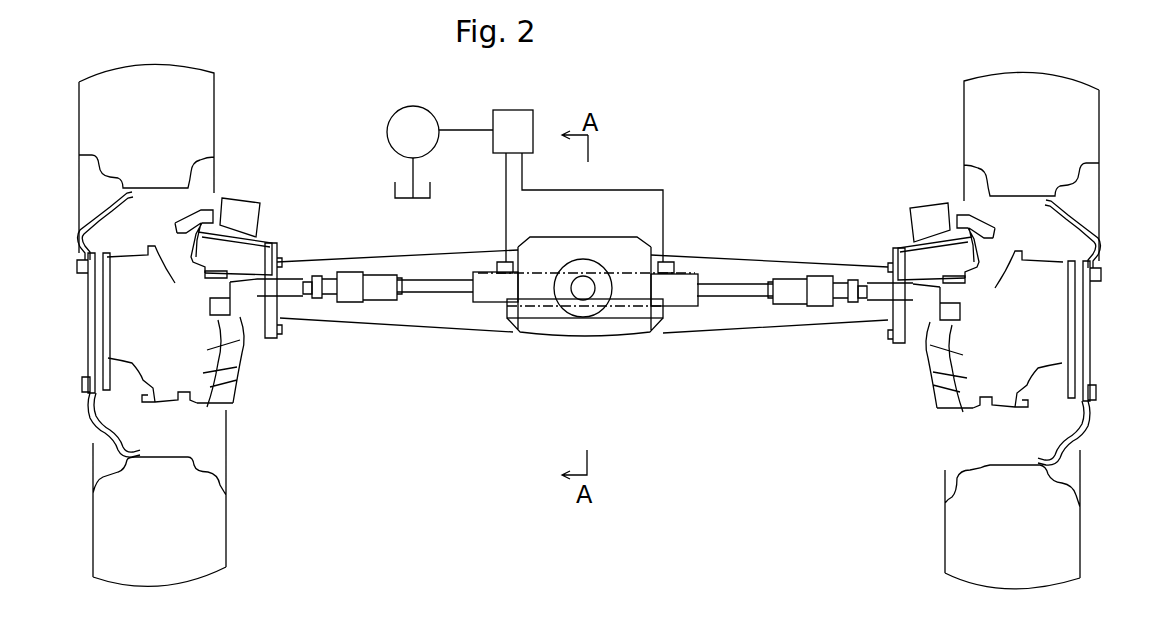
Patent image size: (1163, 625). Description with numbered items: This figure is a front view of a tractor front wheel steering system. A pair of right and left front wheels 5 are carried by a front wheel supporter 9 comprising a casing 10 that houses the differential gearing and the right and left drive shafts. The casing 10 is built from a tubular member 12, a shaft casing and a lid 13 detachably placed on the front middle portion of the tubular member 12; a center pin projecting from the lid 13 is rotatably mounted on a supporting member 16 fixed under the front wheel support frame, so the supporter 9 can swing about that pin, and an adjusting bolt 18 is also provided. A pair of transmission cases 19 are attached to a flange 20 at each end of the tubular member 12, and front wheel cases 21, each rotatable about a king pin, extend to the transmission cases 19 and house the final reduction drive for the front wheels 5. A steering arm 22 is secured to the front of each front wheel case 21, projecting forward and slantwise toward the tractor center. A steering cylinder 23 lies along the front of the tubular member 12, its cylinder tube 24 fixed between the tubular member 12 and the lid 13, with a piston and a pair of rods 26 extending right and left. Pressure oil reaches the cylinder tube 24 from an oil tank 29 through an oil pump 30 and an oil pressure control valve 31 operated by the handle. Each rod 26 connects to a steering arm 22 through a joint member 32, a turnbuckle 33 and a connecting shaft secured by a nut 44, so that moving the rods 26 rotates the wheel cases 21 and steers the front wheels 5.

The front wheels 5 is at (213, 548).
The front wheel supporter 9 is at (582, 298).
The casing 10 is at (482, 352).
The tubular member 12 is at (727, 317).
The lid 13 is at (568, 327).
The supporting member 16 is at (633, 315).
The adjusting bolt 18 is at (582, 288).
The transmission cases 19 is at (260, 302).
The flange 20 is at (282, 310).
The front wheel cases 21 is at (933, 403).
The steering arm 22 is at (197, 303).
The steering cylinder 23 is at (300, 295).
The cylinder tube 24 is at (495, 295).
The rods 26 is at (787, 343).
The oil tank 29 is at (430, 198).
The oil pump 30 is at (440, 132).
The oil pressure control valve 31 is at (578, 186).
The joint member 32 is at (439, 288).
The turnbuckle 33 is at (880, 287).
The nut 44 is at (220, 322).